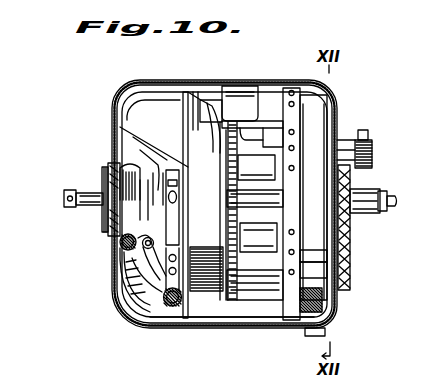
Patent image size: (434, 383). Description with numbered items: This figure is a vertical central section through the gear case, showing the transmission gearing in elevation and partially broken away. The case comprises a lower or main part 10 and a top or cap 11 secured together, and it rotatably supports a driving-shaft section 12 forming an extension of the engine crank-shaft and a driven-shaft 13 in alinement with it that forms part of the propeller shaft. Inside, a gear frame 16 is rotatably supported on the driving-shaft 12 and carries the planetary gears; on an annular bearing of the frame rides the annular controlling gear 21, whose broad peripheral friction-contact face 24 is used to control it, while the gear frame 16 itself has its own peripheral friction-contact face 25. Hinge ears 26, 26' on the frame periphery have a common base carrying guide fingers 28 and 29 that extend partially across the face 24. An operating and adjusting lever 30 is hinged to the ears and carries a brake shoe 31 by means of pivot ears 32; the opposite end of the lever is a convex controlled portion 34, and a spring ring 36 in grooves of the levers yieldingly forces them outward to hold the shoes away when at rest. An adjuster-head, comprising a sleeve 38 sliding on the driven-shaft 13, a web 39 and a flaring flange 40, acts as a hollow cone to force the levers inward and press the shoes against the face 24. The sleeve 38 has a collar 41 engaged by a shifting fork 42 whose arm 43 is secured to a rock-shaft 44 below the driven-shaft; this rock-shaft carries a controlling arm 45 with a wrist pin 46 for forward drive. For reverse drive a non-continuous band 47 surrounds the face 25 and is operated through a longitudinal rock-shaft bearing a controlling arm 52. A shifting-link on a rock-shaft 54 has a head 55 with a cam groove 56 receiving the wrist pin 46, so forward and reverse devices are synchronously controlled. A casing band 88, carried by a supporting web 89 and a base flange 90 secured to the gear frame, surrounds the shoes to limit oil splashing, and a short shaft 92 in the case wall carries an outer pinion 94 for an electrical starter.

The lower or main part of gear case 10 is at (214, 329).
The top or cap of gear case 11 is at (134, 108).
The driving-shaft section 12 is at (357, 191).
The driven-shaft 13 is at (97, 189).
The gear frame 16 is at (300, 97).
The controlling device or gear 21 is at (196, 108).
The peripheral friction-contact face 24 is at (163, 101).
The peripheral friction-contact face of gear frame 25 is at (338, 124).
The hinge ear 26 is at (325, 182).
The hinge ear 26' is at (304, 347).
The guide finger 28 is at (256, 130).
The guide finger 29 is at (252, 300).
The operating and adjusting lever 30 is at (296, 207).
The friction-contact retarding device or brake shoe 31 is at (270, 167).
The pivot ear 32 is at (238, 330).
The controlled portion of lever 34 is at (188, 326).
The spring ring 36 is at (120, 116).
The sleeve 38 is at (169, 197).
The web 39 is at (166, 135).
The flange 40 is at (210, 102).
The collar 41 is at (148, 162).
The shifting fork 42 is at (117, 147).
The arm of shifting fork 43 is at (124, 295).
The rock-shaft 44 is at (172, 325).
The controlling arm 45 is at (122, 281).
The wrist pin 46 is at (124, 265).
The non-continuous band 47 is at (300, 270).
The controlling arm 52 is at (178, 340).
The rock-shaft 54 is at (114, 243).
The head 55 is at (103, 222).
The cam groove 56 is at (116, 253).
The casing band 88 is at (226, 88).
The supporting web 89 is at (333, 308).
The base flange 90 is at (300, 253).
The short shaft 92 is at (373, 148).
The pinion 94 is at (369, 132).